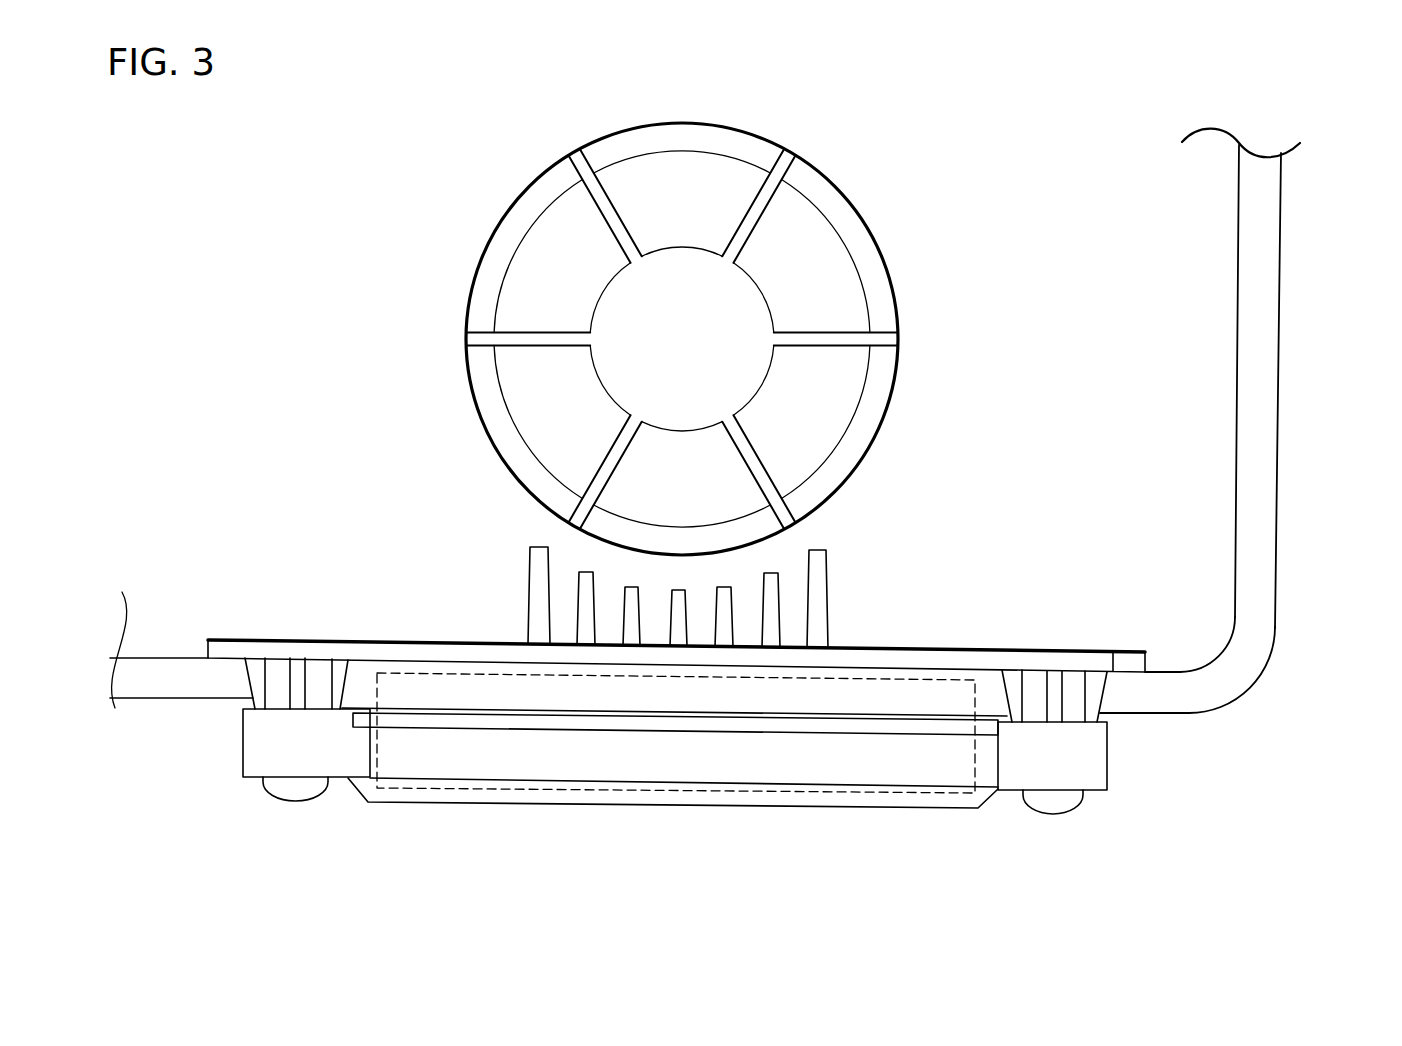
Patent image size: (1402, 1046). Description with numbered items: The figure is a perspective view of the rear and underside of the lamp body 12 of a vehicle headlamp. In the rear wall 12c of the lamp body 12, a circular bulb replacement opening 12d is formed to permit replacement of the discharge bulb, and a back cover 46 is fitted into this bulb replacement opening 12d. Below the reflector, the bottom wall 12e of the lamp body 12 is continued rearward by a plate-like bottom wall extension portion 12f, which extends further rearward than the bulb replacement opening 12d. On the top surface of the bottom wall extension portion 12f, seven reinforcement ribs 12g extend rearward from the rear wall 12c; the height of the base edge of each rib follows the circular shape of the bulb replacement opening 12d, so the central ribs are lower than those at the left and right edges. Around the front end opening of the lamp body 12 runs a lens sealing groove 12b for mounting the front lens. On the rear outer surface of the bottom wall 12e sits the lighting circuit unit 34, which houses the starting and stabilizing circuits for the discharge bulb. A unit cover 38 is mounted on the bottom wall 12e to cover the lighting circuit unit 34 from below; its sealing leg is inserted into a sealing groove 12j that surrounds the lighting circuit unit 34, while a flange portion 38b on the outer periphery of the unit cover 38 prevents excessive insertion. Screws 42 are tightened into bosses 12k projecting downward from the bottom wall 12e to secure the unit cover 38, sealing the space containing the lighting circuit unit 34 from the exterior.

The lamp body 12 is at (1297, 287).
The lens sealing groove 12b is at (1172, 697).
The rear wall 12c is at (1028, 519).
The bulb replacement opening 12d is at (873, 440).
The bottom wall 12e is at (187, 660).
The bottom wall extension portion 12f is at (921, 655).
The reinforcement ribs 12g is at (820, 595).
The sealing groove 12j is at (472, 685).
The bosses 12k is at (285, 672).
The lighting circuit unit 34 is at (688, 805).
The unit cover 38 is at (675, 785).
The flange portion 38b is at (490, 720).
The screws 42 is at (295, 795).
The back cover 46 is at (822, 277).